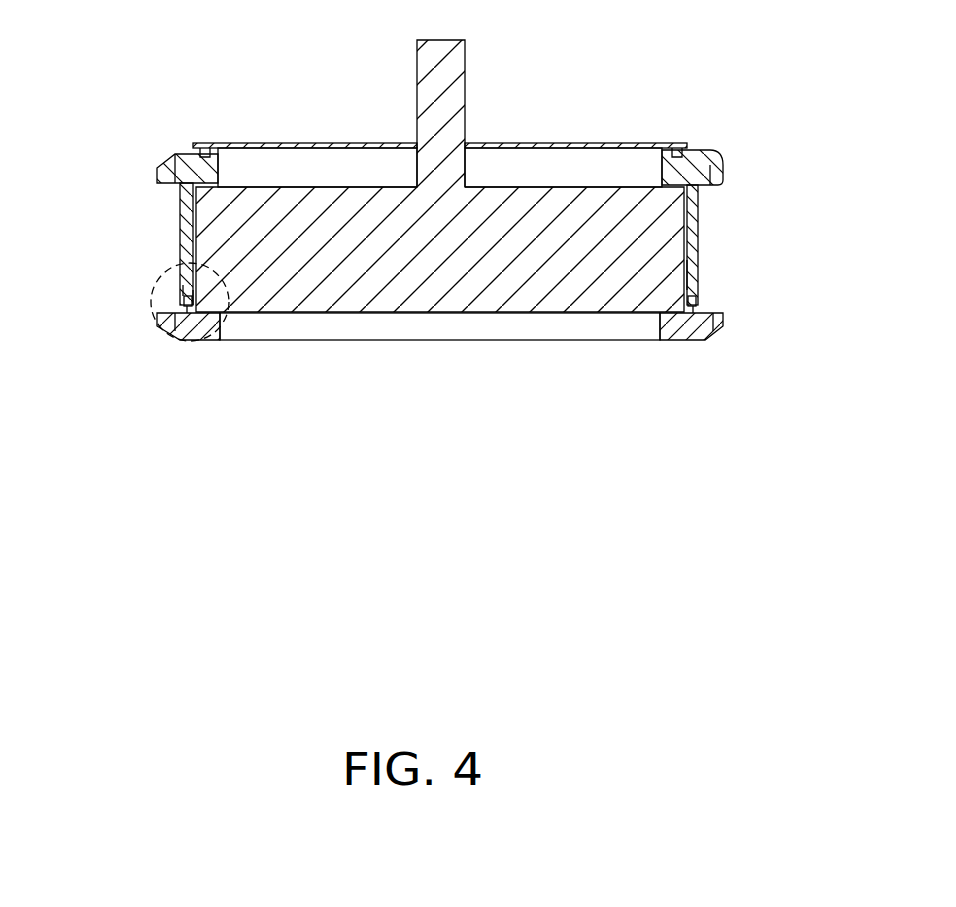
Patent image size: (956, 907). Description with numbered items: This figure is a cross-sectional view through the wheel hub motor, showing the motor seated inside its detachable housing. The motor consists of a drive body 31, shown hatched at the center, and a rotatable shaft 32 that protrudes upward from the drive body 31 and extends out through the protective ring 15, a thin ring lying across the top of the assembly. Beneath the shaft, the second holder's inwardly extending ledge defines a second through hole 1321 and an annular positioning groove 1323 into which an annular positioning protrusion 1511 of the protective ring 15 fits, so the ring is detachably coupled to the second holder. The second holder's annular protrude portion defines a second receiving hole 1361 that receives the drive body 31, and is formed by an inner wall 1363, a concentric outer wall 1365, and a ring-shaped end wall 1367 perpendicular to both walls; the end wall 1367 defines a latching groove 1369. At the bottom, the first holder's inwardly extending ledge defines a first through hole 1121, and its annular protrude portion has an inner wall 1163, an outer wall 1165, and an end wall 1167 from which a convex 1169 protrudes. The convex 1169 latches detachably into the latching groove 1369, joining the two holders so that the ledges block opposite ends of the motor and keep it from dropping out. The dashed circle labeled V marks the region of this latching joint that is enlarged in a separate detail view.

The protective ring 15 is at (530, 147).
The drive body 31 is at (587, 200).
The rotatable shaft 32 is at (447, 107).
The first through hole 1121 is at (411, 326).
The inner wall 1163 is at (718, 333).
The outer wall 1165 is at (703, 300).
The end wall 1167 is at (165, 315).
The convex 1169 is at (183, 280).
The second through hole 1321 is at (320, 162).
The annular positioning groove 1323 is at (176, 158).
The second receiving hole 1361 is at (185, 218).
The inner wall 1363 is at (701, 250).
The outer wall 1365 is at (701, 275).
The end wall 1367 is at (183, 300).
The latching groove 1369 is at (183, 294).
The annular positioning protrusion 1511 is at (205, 147).
The detail view region V is at (180, 338).